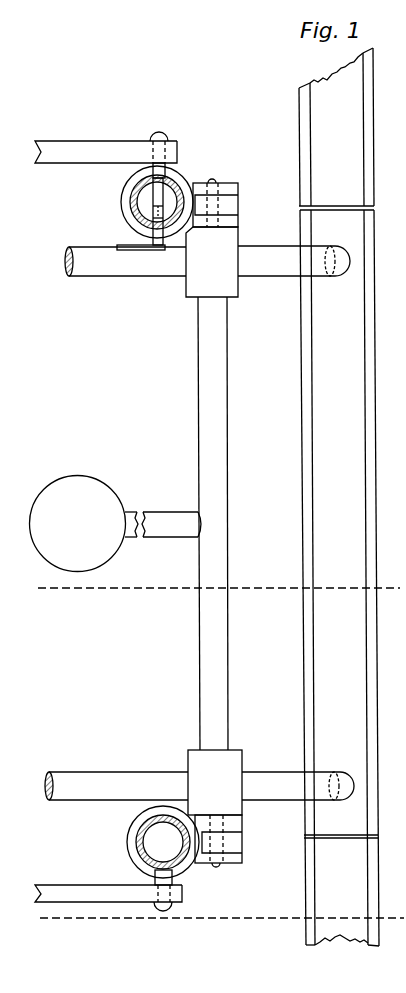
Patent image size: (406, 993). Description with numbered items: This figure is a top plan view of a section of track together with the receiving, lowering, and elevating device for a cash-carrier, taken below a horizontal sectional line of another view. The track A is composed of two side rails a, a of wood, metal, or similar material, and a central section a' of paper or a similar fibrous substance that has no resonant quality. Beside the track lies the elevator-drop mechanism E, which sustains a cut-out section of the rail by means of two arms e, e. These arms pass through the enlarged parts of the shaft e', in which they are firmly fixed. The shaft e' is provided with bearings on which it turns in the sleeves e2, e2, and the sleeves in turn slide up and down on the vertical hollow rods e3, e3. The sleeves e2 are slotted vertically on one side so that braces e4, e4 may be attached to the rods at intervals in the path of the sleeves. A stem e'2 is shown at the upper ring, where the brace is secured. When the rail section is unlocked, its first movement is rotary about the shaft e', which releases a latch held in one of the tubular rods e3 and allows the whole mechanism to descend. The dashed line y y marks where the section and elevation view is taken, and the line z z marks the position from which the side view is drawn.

The track A is at (339, 501).
The side rails a is at (339, 501).
The central section a' is at (339, 499).
The elevator-drop mechanism E is at (192, 521).
The arms e is at (199, 523).
The shaft e' is at (129, 523).
The sleeves e2 is at (227, 523).
The vertical hollow rods e3 is at (173, 181).
The stem or pin e'2 is at (148, 214).
The braces e4 is at (108, 521).
The line y y is at (213, 590).
The line z z is at (215, 921).